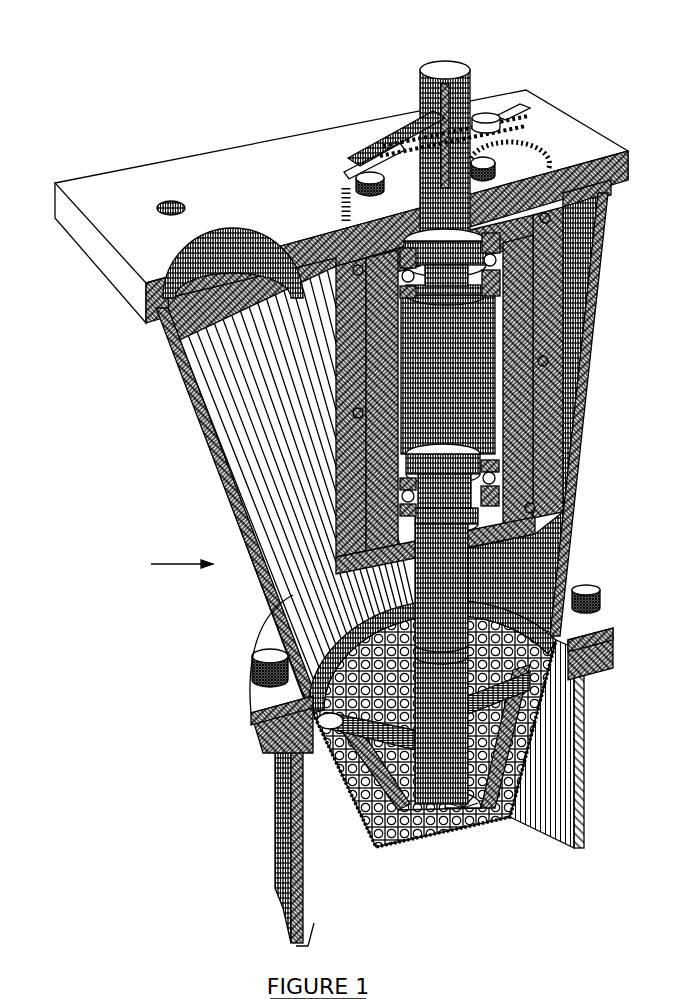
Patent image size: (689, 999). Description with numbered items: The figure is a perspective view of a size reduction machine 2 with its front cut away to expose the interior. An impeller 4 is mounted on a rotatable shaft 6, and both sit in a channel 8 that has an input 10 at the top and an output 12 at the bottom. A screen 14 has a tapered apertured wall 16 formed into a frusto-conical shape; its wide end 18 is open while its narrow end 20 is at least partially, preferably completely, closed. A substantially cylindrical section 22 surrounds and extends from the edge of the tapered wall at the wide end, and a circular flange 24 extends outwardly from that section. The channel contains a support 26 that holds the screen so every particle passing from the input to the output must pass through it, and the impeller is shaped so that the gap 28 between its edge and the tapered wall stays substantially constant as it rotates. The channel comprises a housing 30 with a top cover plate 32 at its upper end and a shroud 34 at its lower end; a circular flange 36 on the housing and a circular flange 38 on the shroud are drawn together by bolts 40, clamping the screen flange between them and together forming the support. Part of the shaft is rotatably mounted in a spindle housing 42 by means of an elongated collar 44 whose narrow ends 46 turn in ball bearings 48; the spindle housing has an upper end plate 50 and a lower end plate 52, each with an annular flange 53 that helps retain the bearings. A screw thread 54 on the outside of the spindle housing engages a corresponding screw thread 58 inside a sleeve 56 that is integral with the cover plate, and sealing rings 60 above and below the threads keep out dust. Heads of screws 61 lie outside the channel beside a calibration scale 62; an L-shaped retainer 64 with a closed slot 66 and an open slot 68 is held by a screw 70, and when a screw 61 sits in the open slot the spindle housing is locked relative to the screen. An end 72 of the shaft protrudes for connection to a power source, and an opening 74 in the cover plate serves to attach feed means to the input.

The size reduction machine 2 is at (172, 564).
The impeller 4 is at (513, 803).
The rotatable shaft 6 is at (435, 580).
The channel 8 is at (425, 452).
The input 10 is at (185, 252).
The output 12 is at (288, 938).
The screen 14 is at (312, 722).
The tapered apertured wall 16 is at (365, 840).
The wide end 18 is at (595, 600).
The narrow end 20 is at (450, 814).
The cylindrical section 22 is at (572, 676).
The circular flange 24 is at (545, 643).
The support 26 is at (240, 712).
The gap 28 is at (355, 838).
The housing 30 is at (200, 420).
The top cover plate 32 is at (200, 153).
The shroud 34 is at (270, 834).
The circular flange 36 is at (258, 690).
The circular flange 38 is at (248, 732).
The bolts 40 is at (262, 655).
The spindle housing 42 is at (515, 392).
The elongated collar 44 is at (380, 485).
The narrow ends 46 is at (445, 270).
The ball bearings 48 is at (525, 245).
The upper end plate 50 is at (490, 170).
The lower end plate 52 is at (515, 537).
The annular flange 53 is at (583, 175).
The screw thread 54 is at (548, 302).
The sleeve 56 is at (215, 346).
The screw thread 58 is at (215, 386).
The sealing rings 60 is at (190, 316).
The screws 61 is at (368, 152).
The calibration scale 62 is at (330, 195).
The L-shaped retainer 64 is at (380, 128).
The closed slot 66 is at (388, 135).
The open slot 68 is at (348, 170).
The screw 70 is at (480, 106).
The end of shaft 72 is at (437, 58).
The opening 74 is at (160, 194).